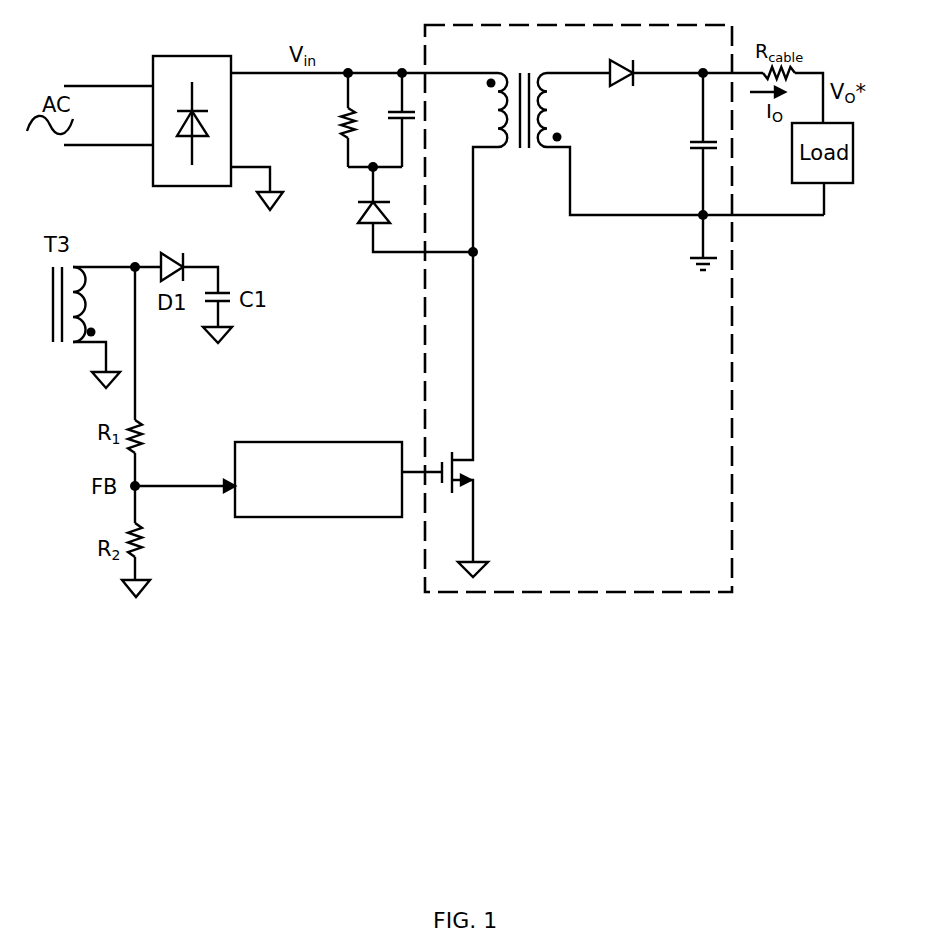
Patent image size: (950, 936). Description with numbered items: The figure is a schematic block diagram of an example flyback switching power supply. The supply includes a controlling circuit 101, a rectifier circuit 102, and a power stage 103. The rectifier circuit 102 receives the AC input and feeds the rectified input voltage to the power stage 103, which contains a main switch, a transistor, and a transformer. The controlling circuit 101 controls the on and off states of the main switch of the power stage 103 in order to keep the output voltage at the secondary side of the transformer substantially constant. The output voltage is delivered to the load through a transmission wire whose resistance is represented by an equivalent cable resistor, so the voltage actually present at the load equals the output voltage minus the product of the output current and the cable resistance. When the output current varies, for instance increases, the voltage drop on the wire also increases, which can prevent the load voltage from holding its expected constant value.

The controlling circuit 101 is at (375, 507).
The rectifier circuit 102 is at (192, 56).
The power stage 103 is at (713, 577).